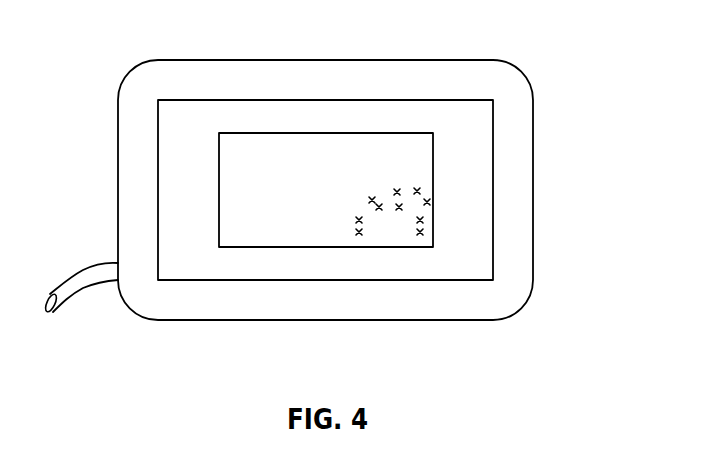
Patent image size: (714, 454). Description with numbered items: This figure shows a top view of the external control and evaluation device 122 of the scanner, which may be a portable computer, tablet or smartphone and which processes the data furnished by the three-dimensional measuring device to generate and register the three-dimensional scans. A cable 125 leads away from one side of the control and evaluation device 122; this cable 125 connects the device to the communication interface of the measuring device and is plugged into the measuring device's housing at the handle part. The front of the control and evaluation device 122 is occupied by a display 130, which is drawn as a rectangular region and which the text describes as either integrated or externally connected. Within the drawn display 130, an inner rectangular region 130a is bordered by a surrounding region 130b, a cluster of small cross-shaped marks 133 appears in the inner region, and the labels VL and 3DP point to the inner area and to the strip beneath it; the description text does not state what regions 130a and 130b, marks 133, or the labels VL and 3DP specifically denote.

The control and evaluation device 122 is at (515, 276).
The cable 125 is at (86, 280).
The display 130 is at (280, 97).
The display panel 130a is at (243, 153).
The bezel 130b is at (185, 140).
The markers 133 is at (397, 192).
The visible layer VL is at (230, 198).
The 3D printed portion 3DP is at (358, 259).